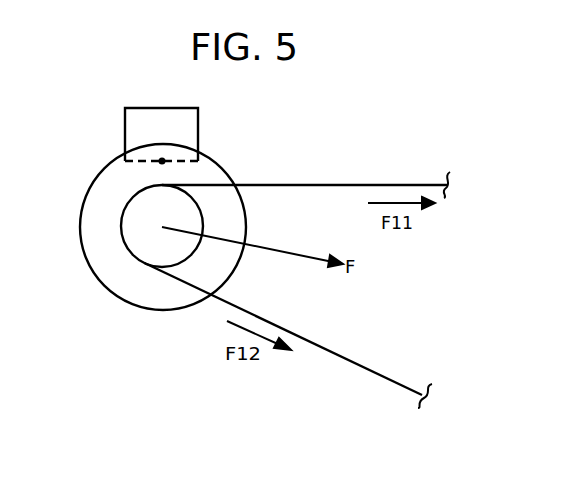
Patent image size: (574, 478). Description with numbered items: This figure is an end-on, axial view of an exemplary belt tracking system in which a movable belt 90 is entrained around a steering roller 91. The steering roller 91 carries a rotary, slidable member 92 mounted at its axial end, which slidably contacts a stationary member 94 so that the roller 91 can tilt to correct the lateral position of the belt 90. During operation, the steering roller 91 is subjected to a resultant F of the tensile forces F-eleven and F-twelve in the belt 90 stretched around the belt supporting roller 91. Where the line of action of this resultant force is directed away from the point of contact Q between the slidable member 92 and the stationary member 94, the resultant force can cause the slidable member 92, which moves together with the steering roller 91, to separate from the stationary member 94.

The movable belt 90 is at (332, 183).
The steering roller 91 is at (135, 207).
The slidable member 92 is at (88, 232).
The stationary member 94 is at (125, 129).
The point of contact Q is at (162, 161).